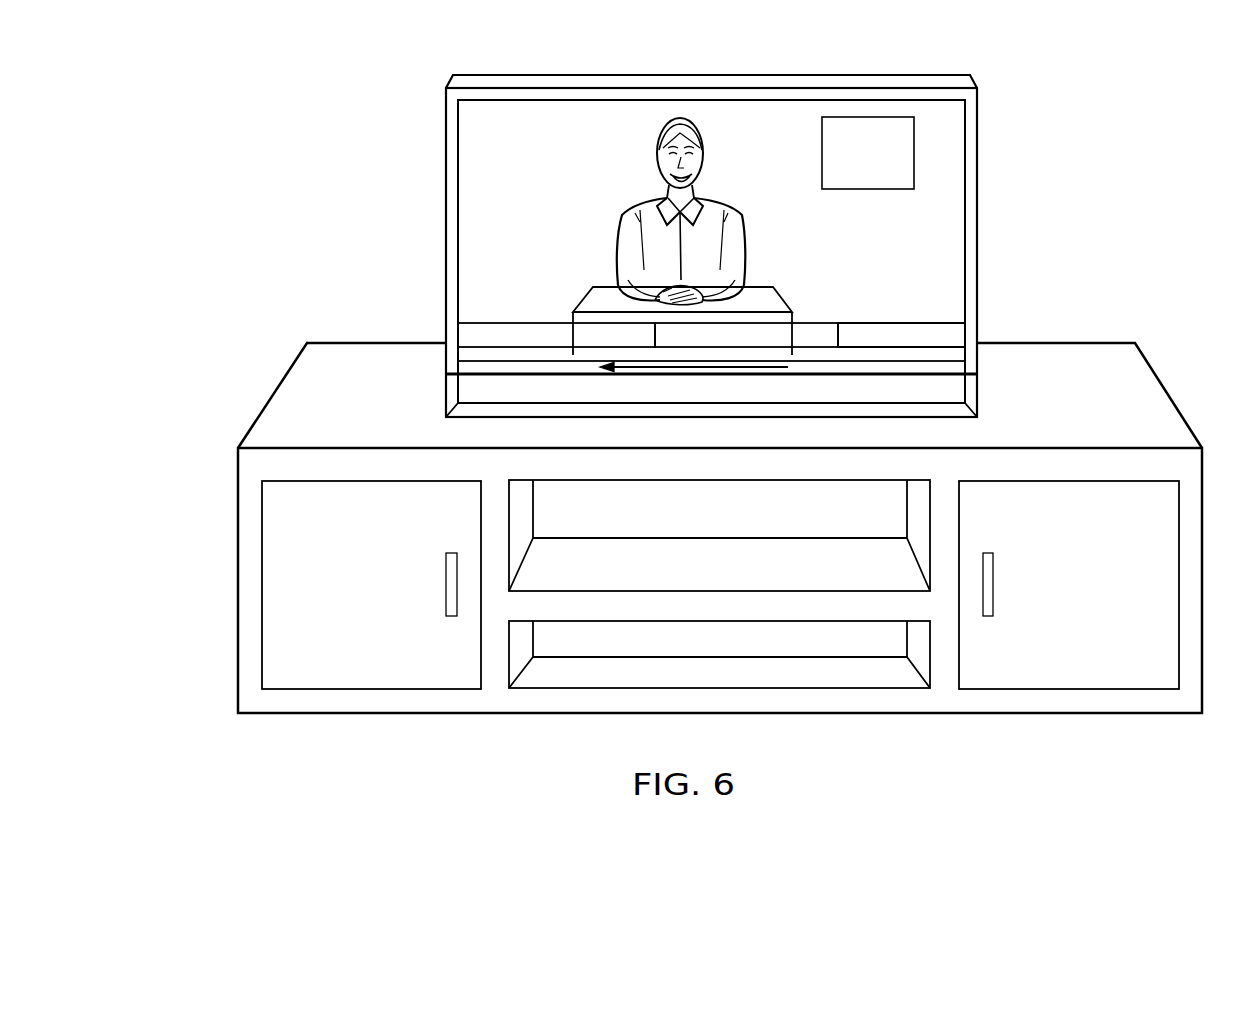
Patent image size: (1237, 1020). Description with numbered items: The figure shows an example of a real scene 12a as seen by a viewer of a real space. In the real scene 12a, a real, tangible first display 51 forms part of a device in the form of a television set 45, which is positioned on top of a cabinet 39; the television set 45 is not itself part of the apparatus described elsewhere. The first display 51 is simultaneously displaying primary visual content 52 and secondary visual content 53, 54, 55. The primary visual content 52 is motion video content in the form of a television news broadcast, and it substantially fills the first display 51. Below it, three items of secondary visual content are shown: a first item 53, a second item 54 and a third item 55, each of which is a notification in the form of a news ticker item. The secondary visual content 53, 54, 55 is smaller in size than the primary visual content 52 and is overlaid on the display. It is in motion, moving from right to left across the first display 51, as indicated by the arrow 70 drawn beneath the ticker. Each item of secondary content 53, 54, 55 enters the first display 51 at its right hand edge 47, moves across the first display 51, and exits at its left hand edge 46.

The real scene 12a is at (220, 550).
The cabinet 39 is at (1148, 400).
The television set 45 is at (490, 120).
The left hand edge 46 is at (457, 160).
The right hand edge 47 is at (965, 120).
The first display 51 is at (955, 162).
The primary visual content 52 is at (752, 248).
The first item of secondary visual content 53 is at (497, 318).
The second item of secondary visual content 54 is at (818, 318).
The third item of secondary visual content 55 is at (920, 318).
The arrow 70 is at (705, 375).